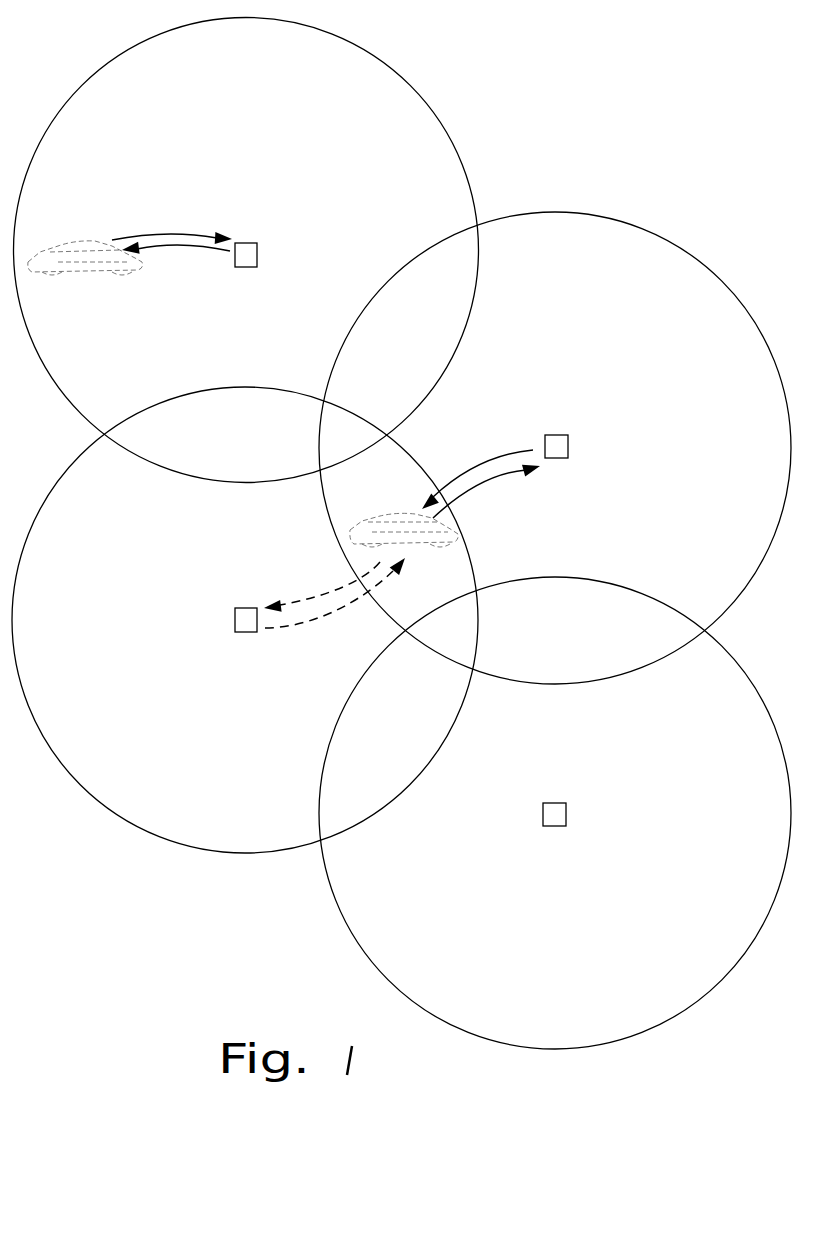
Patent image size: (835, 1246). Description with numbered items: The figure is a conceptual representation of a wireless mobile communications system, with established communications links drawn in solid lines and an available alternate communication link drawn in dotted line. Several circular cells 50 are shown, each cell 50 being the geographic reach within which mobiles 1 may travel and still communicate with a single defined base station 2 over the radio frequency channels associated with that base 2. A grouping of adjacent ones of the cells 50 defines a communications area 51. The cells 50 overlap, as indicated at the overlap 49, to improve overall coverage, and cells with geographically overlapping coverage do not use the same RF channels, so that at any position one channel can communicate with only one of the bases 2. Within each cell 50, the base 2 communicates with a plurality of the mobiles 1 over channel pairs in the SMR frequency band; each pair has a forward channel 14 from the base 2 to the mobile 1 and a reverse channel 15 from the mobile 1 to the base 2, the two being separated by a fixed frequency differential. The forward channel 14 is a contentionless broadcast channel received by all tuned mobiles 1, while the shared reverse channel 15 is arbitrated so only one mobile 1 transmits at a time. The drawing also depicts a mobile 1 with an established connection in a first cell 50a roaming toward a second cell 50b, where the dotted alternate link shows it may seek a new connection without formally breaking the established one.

The mobile end system 1 is at (73, 243).
The base station 2 is at (250, 248).
The forward channel 14 is at (185, 253).
The reverse channel 15 is at (148, 232).
The cell overlap 49 is at (448, 273).
The cell 50 is at (343, 108).
The first cell 50a is at (675, 285).
The second cell 50b is at (187, 803).
The communications area 51 is at (668, 104).